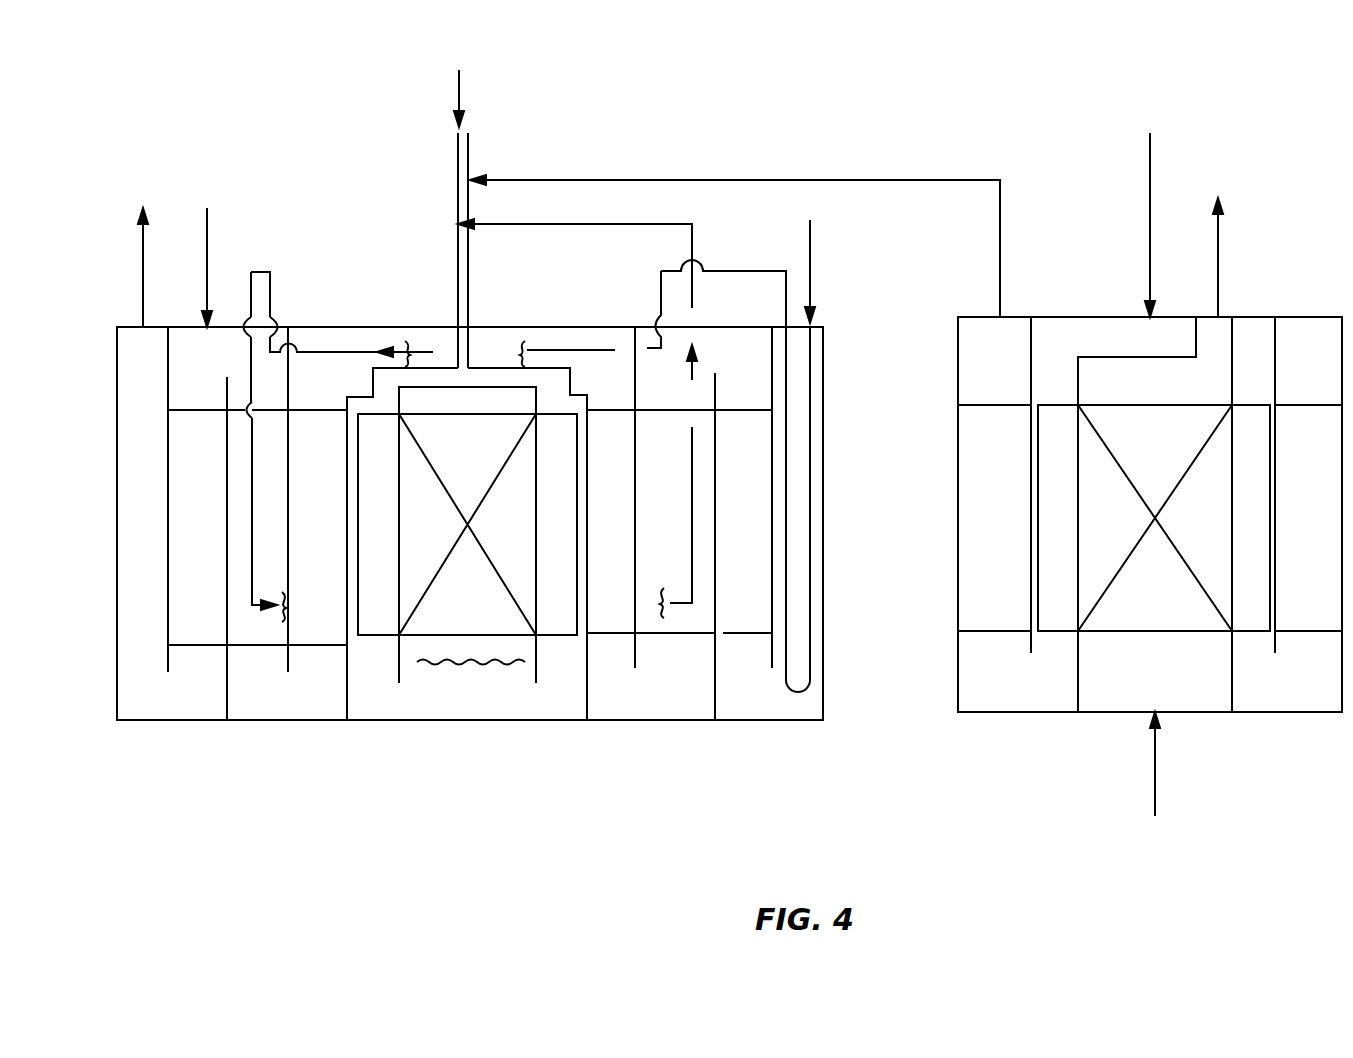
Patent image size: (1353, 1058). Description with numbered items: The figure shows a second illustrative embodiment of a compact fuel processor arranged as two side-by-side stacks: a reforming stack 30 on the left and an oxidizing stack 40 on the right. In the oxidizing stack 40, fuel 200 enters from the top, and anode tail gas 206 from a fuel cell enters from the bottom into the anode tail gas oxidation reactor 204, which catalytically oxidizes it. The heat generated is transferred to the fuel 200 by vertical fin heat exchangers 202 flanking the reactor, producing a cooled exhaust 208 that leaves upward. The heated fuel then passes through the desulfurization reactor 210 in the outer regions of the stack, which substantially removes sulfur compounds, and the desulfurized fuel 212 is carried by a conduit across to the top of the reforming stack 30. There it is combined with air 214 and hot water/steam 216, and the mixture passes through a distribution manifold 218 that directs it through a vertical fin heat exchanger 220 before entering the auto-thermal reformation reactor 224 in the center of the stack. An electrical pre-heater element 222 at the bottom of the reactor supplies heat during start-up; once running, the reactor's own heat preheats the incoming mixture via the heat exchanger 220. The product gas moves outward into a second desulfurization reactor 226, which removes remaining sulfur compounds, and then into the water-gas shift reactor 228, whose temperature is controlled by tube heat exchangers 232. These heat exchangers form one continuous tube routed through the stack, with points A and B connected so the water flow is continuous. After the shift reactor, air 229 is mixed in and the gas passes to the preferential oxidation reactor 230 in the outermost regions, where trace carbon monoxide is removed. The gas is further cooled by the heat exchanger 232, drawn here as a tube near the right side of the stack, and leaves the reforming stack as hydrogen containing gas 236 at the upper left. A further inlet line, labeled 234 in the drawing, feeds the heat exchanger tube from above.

The reforming stack 30 is at (214, 791).
The oxidizing stack 40 is at (1018, 791).
The fuel 200 is at (1150, 165).
The vertical fin heat exchangers 202 is at (1154, 474).
The anode tail gas oxidation reactor 204 is at (1155, 514).
The anode tail gas 206 is at (1155, 778).
The cooled exhaust 208 is at (1218, 270).
The desulfurization reactor 210 is at (1150, 485).
The desulfurized fuel 212 is at (622, 180).
The air 214 is at (460, 88).
The hot water/steam 216 is at (528, 224).
The distribution manifold 218 is at (462, 360).
The vertical fin heat exchanger 220 is at (467, 544).
The electrical pre-heater element 222 is at (463, 664).
The auto-thermal reformation reactor 224 is at (467, 535).
The second desulfurization reactor 226 is at (461, 499).
The water-gas shift reactor 228 is at (468, 455).
The air 229 is at (208, 273).
The preferential oxidation reactor 230 is at (470, 523).
The tube heat exchangers 232 is at (812, 470).
The inlet 234 is at (810, 270).
The hydrogen containing gas 236 is at (142, 273).